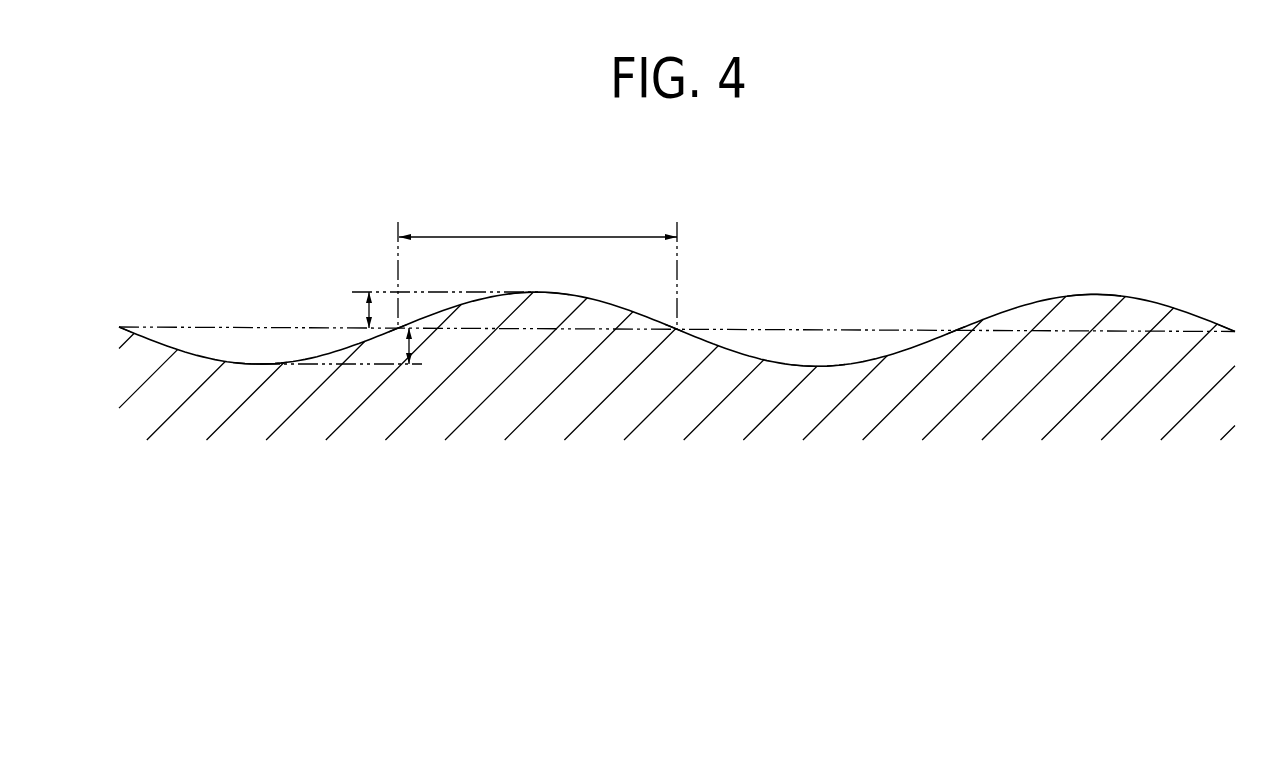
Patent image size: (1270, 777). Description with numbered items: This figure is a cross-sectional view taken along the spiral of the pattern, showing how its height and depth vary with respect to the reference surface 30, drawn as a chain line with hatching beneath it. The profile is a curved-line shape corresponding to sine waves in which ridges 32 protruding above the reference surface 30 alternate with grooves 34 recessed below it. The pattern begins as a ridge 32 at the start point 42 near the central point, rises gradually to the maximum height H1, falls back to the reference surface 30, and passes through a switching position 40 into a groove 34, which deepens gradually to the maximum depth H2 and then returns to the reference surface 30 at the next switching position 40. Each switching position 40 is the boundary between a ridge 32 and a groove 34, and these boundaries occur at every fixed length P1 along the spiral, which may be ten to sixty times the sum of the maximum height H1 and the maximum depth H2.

The reference surface 30 is at (272, 327).
The ridge 32 is at (567, 294).
The groove 34 is at (232, 363).
The switching position 40 is at (120, 327).
The start point 42 is at (1235, 331).
The fixed length P1 is at (537, 265).
The maximum height H1 is at (363, 308).
The maximum depth H2 is at (410, 345).